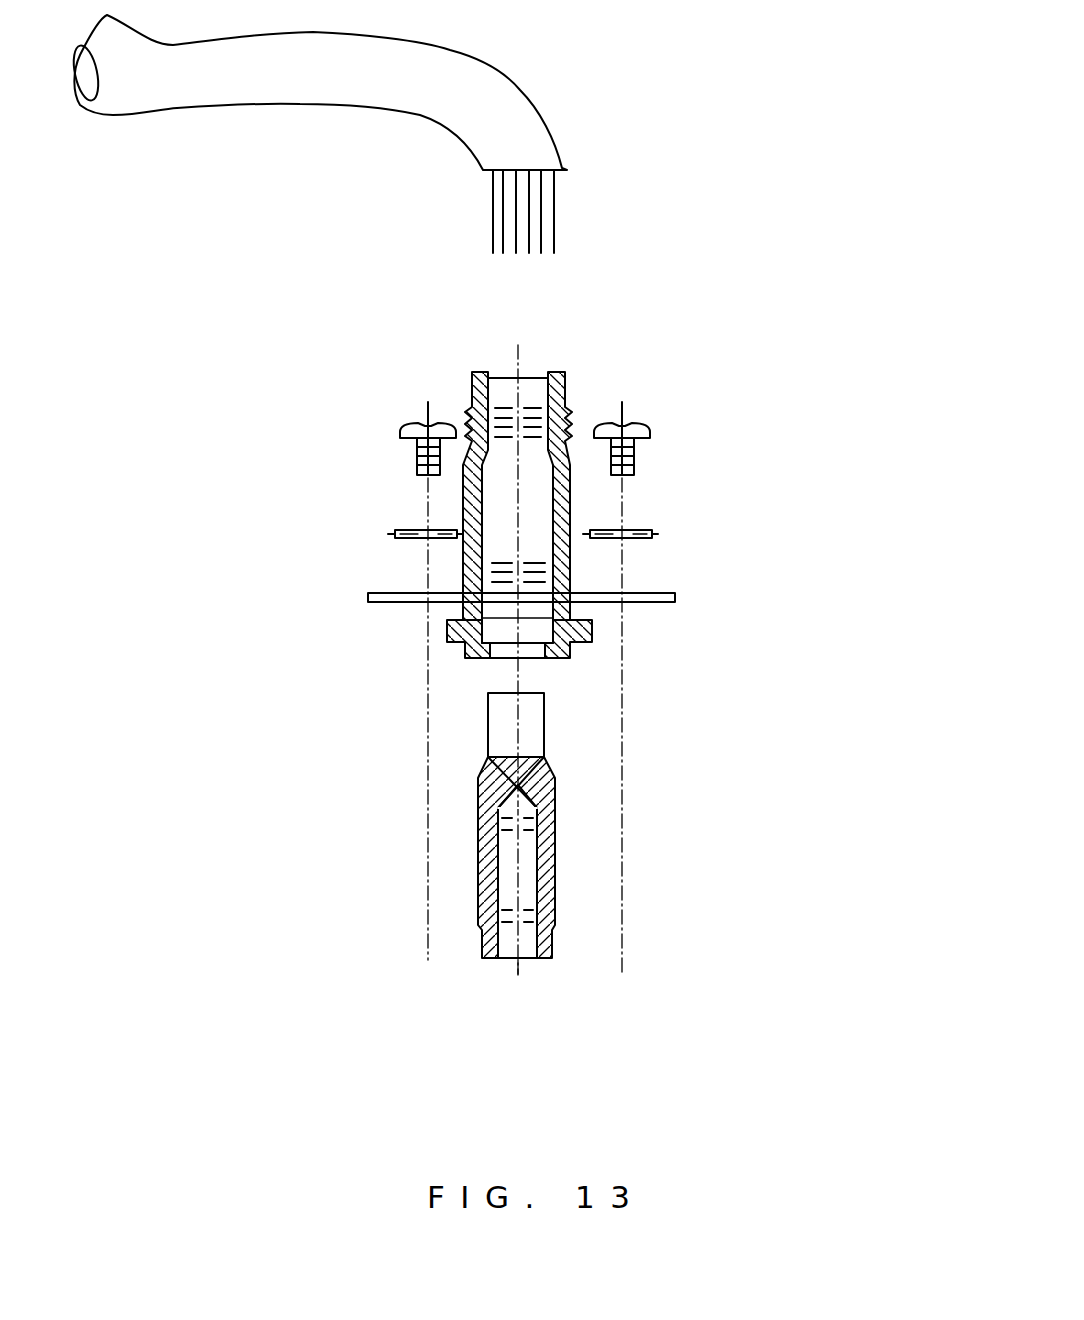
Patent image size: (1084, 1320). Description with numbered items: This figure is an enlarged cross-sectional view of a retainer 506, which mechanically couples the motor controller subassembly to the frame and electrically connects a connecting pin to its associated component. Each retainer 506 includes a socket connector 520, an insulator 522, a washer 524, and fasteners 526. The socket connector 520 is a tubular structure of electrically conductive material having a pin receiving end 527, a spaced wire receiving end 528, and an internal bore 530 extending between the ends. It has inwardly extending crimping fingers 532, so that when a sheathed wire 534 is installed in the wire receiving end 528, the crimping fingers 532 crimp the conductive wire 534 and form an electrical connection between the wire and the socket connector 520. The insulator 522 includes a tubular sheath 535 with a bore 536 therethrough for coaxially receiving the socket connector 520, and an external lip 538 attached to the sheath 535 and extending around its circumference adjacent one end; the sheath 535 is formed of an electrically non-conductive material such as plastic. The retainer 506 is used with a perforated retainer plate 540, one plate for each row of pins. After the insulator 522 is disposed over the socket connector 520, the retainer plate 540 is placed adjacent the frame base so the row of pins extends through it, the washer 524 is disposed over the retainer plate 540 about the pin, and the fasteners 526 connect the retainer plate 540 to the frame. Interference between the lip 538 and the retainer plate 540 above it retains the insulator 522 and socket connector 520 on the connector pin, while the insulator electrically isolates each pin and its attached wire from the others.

The sheathed wire 534 is at (555, 218).
The bore 536 is at (533, 395).
The fasteners 526 is at (412, 425).
The retainer 506 is at (737, 402).
The insulator 522 is at (314, 717).
The tubular sheath 535 is at (570, 518).
The washer 524 is at (645, 530).
The retainer plate 540 is at (648, 593).
The external lip 538 is at (590, 642).
The wire receiving end 528 is at (540, 693).
The crimping fingers 532 is at (478, 775).
The internal bore 530 is at (527, 892).
The socket connector 520 is at (627, 800).
The pin receiving end 527 is at (523, 975).